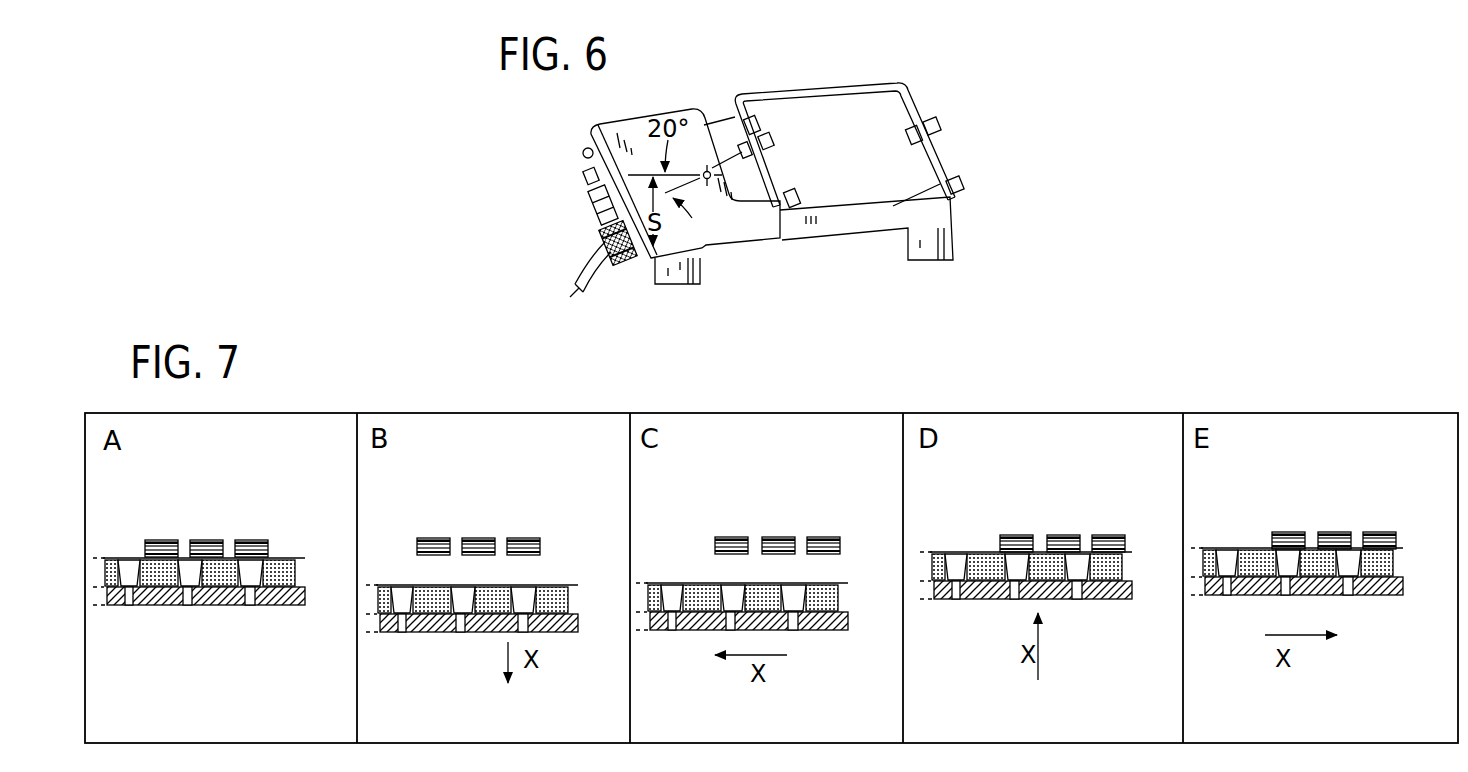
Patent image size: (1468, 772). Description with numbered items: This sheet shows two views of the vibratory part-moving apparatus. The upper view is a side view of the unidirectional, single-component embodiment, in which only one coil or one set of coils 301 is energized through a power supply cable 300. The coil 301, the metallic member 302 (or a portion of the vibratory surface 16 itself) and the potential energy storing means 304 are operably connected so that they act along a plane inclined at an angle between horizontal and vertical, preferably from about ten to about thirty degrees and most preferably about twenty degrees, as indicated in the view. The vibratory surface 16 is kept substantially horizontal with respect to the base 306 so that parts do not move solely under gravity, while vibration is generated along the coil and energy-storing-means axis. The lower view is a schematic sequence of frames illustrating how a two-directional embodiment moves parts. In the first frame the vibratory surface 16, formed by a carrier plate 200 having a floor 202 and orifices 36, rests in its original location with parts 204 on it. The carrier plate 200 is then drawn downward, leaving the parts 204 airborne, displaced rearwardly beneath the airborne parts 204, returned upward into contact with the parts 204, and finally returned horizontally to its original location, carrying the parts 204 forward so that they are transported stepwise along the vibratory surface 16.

In FIG. 6, the vibratory surface 16 is at (813, 88).
In FIG. 6, the power supply cable 300 is at (588, 250).
In FIG. 6, the coil 301 is at (588, 177).
In FIG. 6, the metallic member 302 is at (718, 132).
In FIG. 6, the potential energy storing means 304 is at (775, 167).
In FIG. 6, the base 306 is at (842, 223).
In FIG. 7, the orifices 36 is at (128, 568).
In FIG. 7, the carrier plate 200 is at (303, 577).
In FIG. 7, the floor 202 is at (218, 607).
In FIG. 7, the parts 204 is at (247, 542).